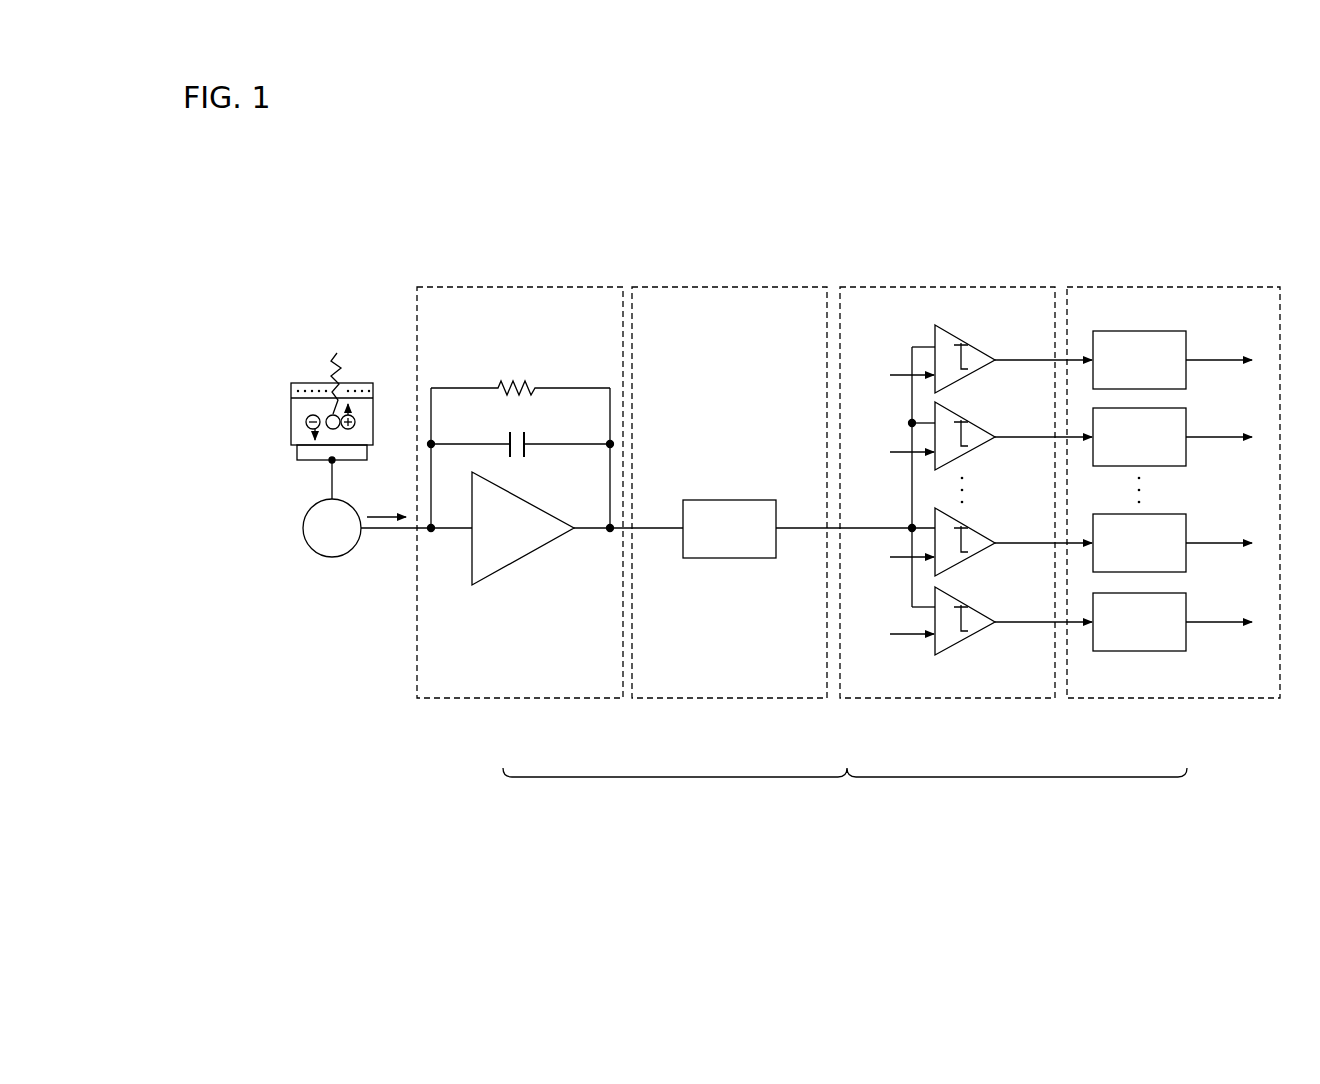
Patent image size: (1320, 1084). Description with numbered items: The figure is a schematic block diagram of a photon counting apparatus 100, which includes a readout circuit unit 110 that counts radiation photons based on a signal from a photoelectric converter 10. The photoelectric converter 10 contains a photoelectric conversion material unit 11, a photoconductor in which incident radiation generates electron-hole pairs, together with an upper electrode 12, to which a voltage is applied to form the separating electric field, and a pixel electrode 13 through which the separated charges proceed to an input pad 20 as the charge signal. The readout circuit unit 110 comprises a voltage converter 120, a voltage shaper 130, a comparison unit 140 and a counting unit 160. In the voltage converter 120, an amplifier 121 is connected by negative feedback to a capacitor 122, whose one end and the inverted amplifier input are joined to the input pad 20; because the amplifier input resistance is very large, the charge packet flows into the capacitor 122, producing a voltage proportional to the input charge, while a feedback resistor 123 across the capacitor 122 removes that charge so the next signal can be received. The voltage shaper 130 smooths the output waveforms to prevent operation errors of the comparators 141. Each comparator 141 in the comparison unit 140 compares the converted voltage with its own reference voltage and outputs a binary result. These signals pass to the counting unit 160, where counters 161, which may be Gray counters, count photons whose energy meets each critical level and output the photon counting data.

The photoelectric converter 10 is at (350, 362).
The photoelectric conversion material unit 11 is at (356, 420).
The upper electrode 12 is at (365, 390).
The pixel electrode 13 is at (368, 451).
The input pad 20 is at (333, 557).
The photon counting apparatus 100 is at (1158, 262).
The readout circuit unit 110 is at (845, 789).
The voltage converter 120 is at (519, 701).
The amplifier 121 is at (523, 500).
The capacitor 122 is at (527, 437).
The feedback resistor 123 is at (535, 387).
The voltage shaper 130 is at (773, 701).
The comparison unit 140 is at (947, 701).
The comparator 141 is at (968, 340).
The counting unit 160 is at (1173, 701).
The counter 161 is at (1142, 330).